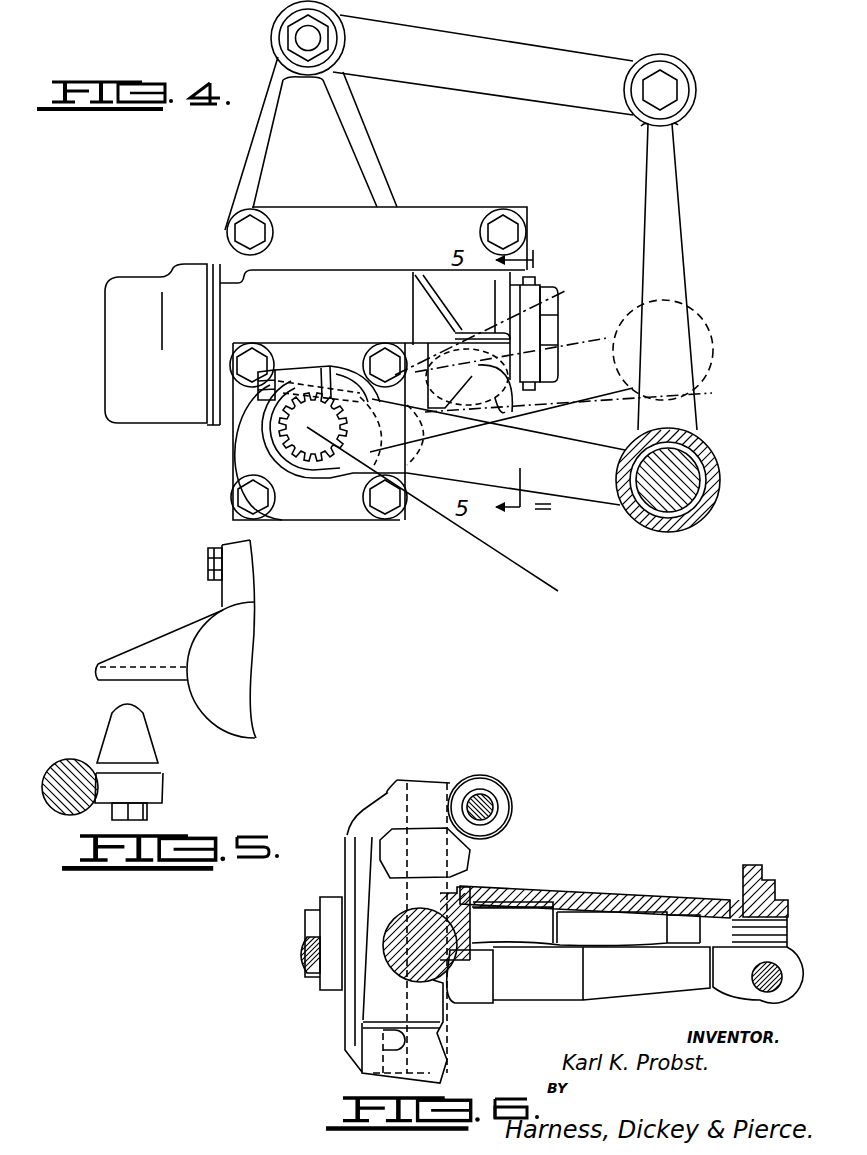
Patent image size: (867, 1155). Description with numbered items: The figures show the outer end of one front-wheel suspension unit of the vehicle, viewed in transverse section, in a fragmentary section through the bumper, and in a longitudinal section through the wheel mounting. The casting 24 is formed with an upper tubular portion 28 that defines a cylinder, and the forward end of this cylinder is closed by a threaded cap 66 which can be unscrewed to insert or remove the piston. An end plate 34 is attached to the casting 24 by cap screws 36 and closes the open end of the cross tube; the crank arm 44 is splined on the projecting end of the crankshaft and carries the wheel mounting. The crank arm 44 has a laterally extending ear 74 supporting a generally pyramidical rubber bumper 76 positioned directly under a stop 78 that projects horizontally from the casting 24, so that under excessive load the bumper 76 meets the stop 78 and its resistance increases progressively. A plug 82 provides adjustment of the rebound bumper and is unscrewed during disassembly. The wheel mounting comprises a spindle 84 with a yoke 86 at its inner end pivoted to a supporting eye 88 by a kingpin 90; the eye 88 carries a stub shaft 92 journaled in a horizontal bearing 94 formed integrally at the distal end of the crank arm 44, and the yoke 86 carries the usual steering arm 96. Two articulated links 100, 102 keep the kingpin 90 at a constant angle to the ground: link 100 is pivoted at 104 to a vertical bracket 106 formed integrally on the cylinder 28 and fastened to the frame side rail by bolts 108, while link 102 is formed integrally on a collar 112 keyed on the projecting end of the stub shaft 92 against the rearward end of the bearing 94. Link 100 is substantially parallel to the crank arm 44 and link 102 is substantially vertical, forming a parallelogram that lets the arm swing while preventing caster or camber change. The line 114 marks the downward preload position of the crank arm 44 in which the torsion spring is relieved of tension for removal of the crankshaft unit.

In FIG. 4, the casting 24 is at (462, 206).
In FIG. 5, the casting 24 is at (232, 662).
In FIG. 4, the upper tubular portion 28 is at (338, 312).
In FIG. 4, the end plate 34 is at (238, 441).
In FIG. 4, the cap screws 36 is at (242, 362).
In FIG. 4, the crank arm 44 is at (587, 490).
In FIG. 5, the crank arm 44 is at (76, 765).
In FIG. 4, the threaded cap 66 is at (127, 311).
In FIG. 5, the ear 74 is at (150, 787).
In FIG. 4, the rubber bumper 76 is at (505, 405).
In FIG. 5, the rubber bumper 76 is at (136, 742).
In FIG. 4, the stop 78 is at (483, 306).
In FIG. 5, the stop 78 is at (147, 656).
In FIG. 4, the plug 82 is at (550, 331).
In FIG. 6, the spindle 84 is at (300, 946).
In FIG. 6, the yoke 86 is at (368, 818).
In FIG. 6, the supporting eye 88 is at (437, 1019).
In FIG. 6, the kingpin 90 is at (432, 786).
In FIG. 4, the stub shaft 92 is at (672, 462).
In FIG. 6, the stub shaft 92 is at (528, 947).
In FIG. 4, the horizontal bearing 94 is at (707, 464).
In FIG. 6, the horizontal bearing 94 is at (535, 892).
In FIG. 6, the steering arm 96 is at (500, 803).
In FIG. 4, the link 100 is at (463, 40).
In FIG. 4, the link 102 is at (670, 237).
In FIG. 6, the link 102 is at (748, 876).
In FIG. 4, the pivot 104 is at (290, 28).
In FIG. 4, the vertical bracket 106 is at (258, 140).
In FIG. 4, the bolts 108 is at (246, 228).
In FIG. 5, the bolts 108 is at (208, 560).
In FIG. 6, the collar 112 is at (745, 960).
In FIG. 4, the preload position line 114 is at (432, 509).